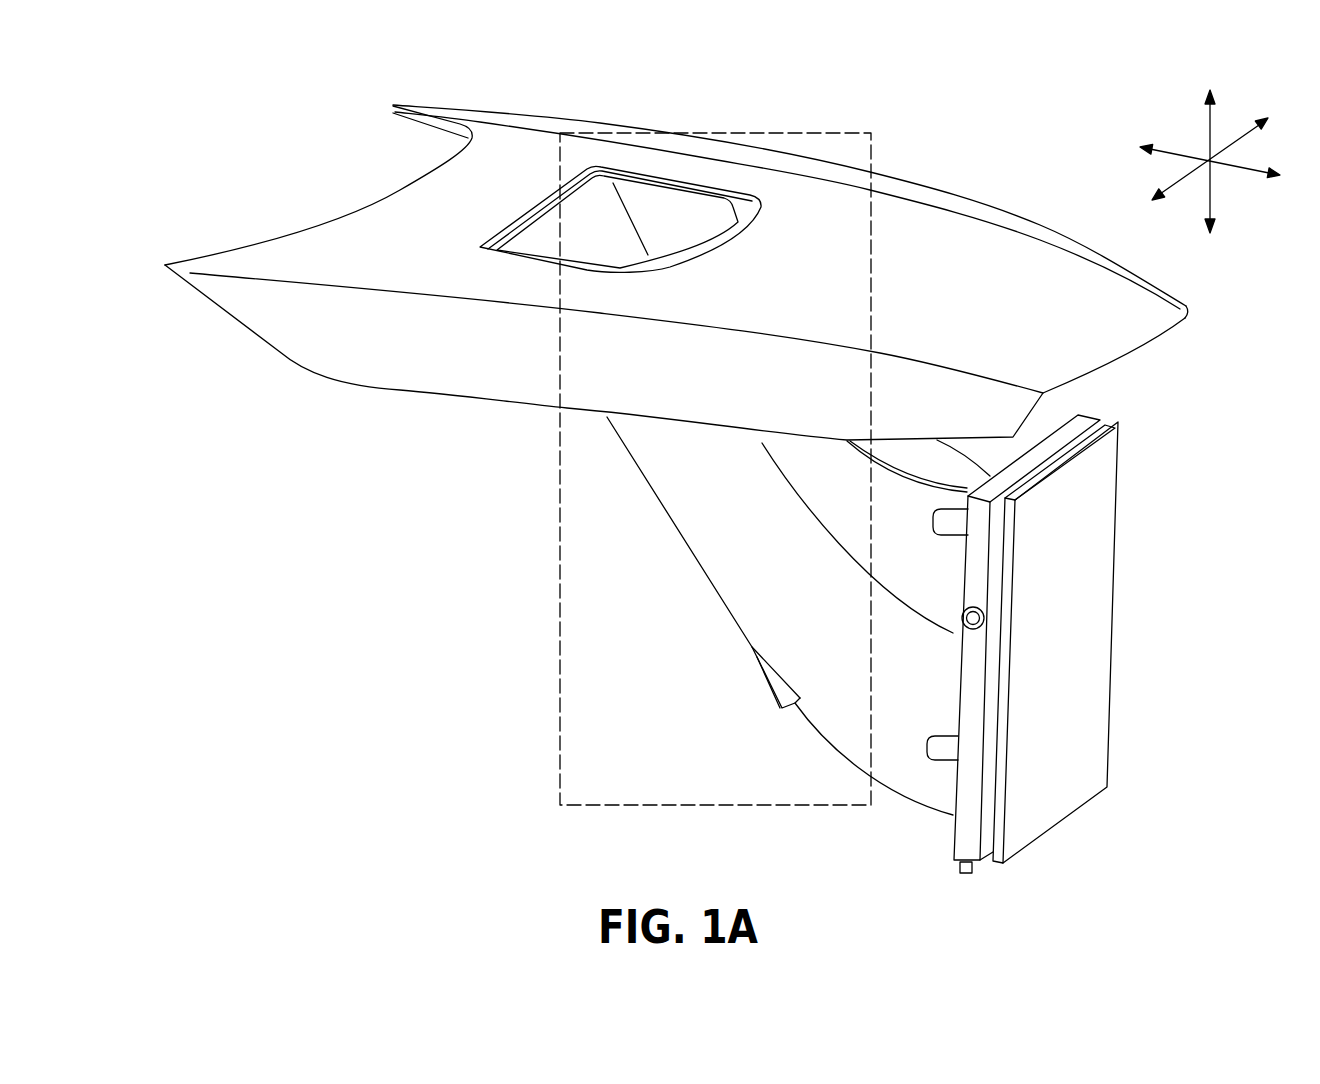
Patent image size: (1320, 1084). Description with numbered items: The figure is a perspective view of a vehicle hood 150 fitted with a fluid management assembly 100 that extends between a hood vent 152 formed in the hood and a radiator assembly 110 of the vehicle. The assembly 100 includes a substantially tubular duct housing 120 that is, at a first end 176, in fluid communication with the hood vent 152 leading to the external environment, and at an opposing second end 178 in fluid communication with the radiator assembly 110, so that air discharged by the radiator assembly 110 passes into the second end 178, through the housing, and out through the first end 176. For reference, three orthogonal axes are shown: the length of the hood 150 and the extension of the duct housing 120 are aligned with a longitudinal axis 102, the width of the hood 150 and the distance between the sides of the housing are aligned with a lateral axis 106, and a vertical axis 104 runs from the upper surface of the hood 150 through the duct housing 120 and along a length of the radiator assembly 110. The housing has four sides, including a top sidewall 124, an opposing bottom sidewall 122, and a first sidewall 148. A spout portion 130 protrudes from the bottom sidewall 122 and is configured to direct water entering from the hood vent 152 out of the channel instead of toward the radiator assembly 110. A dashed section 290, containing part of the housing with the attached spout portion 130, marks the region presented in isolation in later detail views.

The fluid management assembly 100 is at (224, 542).
The longitudinal axis 102 is at (1238, 172).
The vertical axis 104 is at (1208, 128).
The lateral axis 106 is at (1234, 122).
The radiator assembly 110 is at (1101, 604).
The duct housing 120 is at (628, 498).
The bottom sidewall 122 is at (687, 548).
The top sidewall 124 is at (892, 500).
The spout portion 130 is at (750, 706).
The first sidewall 148 is at (762, 600).
The vehicle hood 150 is at (931, 251).
The hood vent 152 is at (542, 195).
The first end 176 is at (590, 439).
The second end 178 is at (905, 833).
The section 290 is at (558, 717).